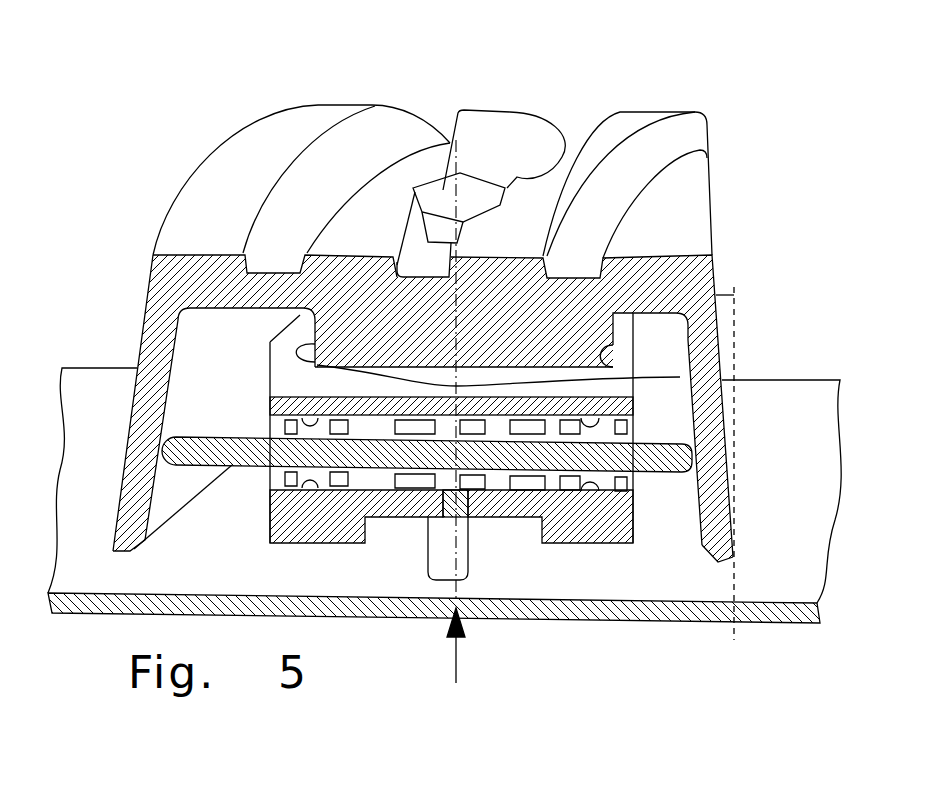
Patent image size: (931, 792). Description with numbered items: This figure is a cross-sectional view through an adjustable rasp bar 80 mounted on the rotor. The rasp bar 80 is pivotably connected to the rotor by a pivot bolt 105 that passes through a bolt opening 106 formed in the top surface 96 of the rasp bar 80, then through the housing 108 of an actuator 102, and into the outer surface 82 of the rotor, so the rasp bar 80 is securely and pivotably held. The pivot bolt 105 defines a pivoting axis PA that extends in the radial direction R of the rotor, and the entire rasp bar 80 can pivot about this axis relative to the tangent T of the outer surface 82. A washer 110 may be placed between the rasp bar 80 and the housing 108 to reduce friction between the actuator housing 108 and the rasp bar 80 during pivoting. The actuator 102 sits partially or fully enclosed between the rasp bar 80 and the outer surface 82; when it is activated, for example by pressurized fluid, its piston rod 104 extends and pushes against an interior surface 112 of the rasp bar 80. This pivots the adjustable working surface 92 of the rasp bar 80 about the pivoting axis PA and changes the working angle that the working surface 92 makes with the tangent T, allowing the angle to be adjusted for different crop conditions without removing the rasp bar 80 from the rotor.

The adjustable rasp bar 80 is at (243, 173).
The top surface 96 is at (407, 167).
The pivot bolt 105 is at (473, 188).
The adjustable working surface 92 is at (683, 268).
The bolt opening 106 is at (432, 243).
The housing 108 is at (285, 365).
The washer 110 is at (605, 384).
The interior surface 112 is at (699, 525).
The actuator 102 is at (335, 530).
The piston rod 104 is at (655, 470).
The outer surface 82 is at (235, 583).
The pivoting axis PA is at (458, 303).
The tangent T is at (736, 467).
The radial direction R is at (455, 658).